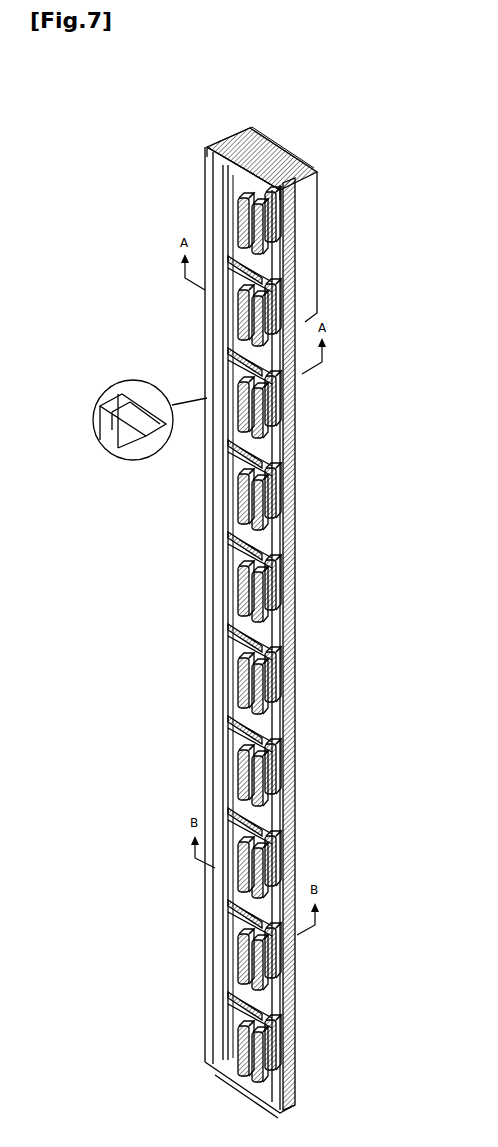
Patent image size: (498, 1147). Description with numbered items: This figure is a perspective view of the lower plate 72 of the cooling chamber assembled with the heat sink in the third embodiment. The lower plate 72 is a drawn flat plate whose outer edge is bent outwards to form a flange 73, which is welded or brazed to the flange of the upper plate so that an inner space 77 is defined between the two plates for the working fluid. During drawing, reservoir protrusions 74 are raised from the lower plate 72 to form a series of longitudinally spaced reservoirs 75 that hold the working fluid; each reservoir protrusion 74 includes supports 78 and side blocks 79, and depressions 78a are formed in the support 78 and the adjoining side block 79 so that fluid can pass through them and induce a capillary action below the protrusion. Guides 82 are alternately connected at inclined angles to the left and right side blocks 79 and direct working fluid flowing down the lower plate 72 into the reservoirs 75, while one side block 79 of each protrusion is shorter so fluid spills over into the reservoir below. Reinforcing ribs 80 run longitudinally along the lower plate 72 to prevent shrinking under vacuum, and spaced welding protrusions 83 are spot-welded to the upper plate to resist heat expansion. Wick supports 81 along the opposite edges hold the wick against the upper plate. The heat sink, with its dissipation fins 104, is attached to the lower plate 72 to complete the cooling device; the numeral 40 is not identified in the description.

The lower plate 72 is at (205, 130).
The dissipation fins 104 is at (304, 164).
The flange 73 is at (207, 158).
The wick supports 81 is at (215, 182).
The guides 82 is at (232, 225).
The side blocks 79 is at (218, 243).
The reinforcing ribs 80 is at (230, 355).
The supports 78 is at (106, 442).
The depressions 78a is at (150, 447).
The reservoir protrusions 74 is at (290, 530).
The welding protrusions 83 is at (228, 690).
The conductor 40 is at (280, 280).
The reservoirs 75 is at (292, 303).
The inner space 77 is at (292, 950).